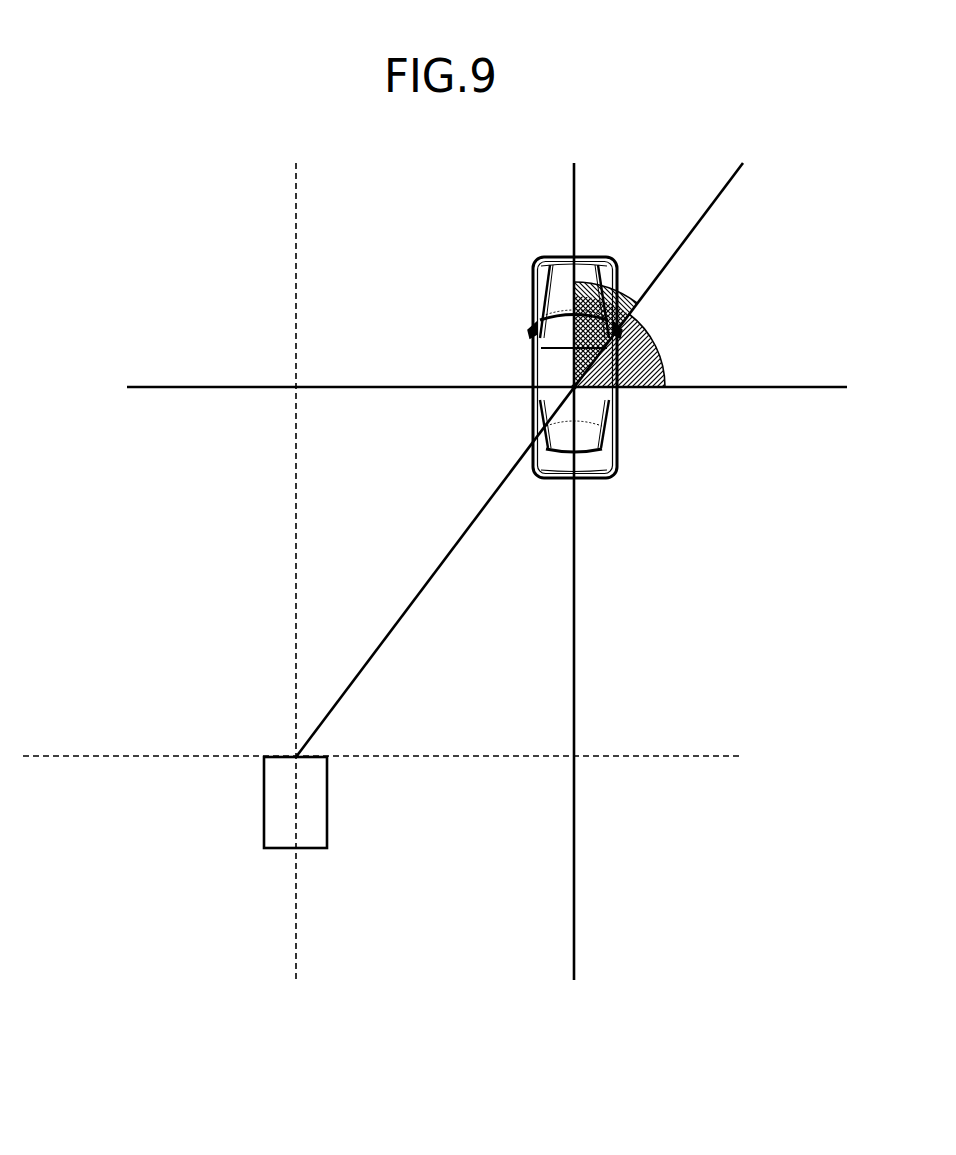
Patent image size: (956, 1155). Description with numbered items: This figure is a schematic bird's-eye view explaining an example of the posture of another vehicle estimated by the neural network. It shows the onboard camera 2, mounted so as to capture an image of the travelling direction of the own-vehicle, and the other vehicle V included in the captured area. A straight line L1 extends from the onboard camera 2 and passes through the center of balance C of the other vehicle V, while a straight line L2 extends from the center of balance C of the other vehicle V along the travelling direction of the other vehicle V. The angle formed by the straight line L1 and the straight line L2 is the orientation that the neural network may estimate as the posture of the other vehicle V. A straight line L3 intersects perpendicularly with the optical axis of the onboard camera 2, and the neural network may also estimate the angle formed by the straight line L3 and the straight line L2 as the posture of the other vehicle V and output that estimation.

The onboard camera 2 is at (329, 800).
The straight line L1 is at (703, 222).
The straight line L2 is at (573, 216).
The straight line L3 is at (780, 386).
The other vehicle V is at (534, 320).
The center of balance C is at (566, 392).